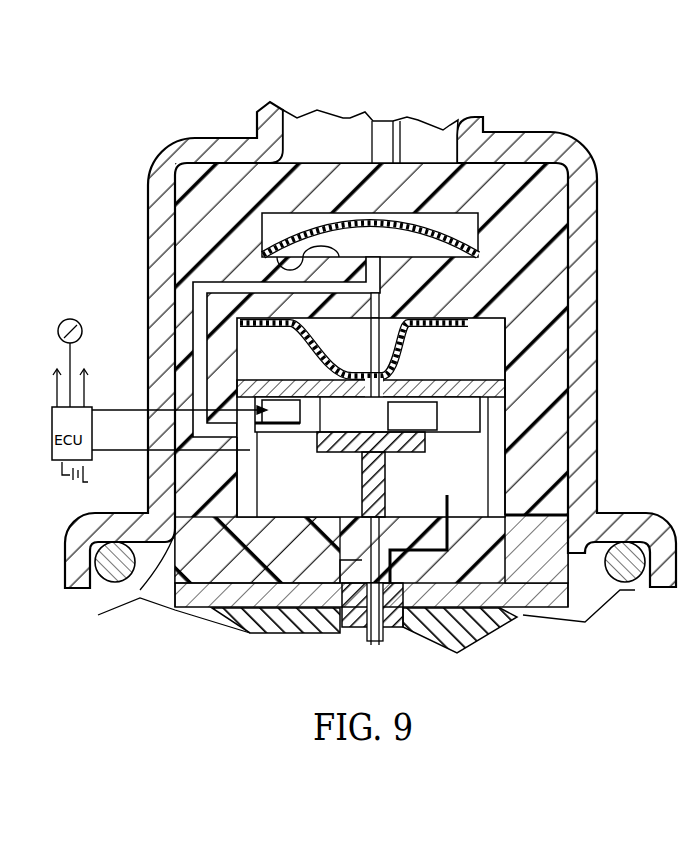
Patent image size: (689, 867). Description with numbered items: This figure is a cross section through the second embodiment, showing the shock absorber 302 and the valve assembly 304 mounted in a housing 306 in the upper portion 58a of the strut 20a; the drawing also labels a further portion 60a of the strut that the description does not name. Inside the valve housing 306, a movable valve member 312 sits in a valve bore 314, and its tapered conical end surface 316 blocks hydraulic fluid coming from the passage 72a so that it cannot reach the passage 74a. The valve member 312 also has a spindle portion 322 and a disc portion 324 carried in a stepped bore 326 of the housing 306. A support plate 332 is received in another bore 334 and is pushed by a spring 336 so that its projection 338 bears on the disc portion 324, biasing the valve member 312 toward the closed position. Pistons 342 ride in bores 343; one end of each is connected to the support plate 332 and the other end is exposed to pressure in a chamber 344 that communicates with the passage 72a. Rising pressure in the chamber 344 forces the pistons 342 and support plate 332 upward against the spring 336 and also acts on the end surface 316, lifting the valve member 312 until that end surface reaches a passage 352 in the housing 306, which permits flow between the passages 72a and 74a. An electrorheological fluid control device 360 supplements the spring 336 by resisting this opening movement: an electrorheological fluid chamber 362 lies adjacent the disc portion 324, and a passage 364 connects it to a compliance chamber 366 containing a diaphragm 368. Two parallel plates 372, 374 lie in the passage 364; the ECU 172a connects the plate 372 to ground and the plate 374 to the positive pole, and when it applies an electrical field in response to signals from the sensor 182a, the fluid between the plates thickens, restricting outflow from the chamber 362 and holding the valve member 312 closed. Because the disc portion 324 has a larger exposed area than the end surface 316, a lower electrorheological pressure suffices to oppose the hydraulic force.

The strut 20a is at (602, 128).
The upper portion of the strut 58a is at (604, 210).
The housing cap 60a is at (230, 142).
The passage 72a is at (342, 598).
The passage 74a is at (515, 615).
The ECU 172a is at (58, 462).
The sensor 182a is at (86, 338).
The shock absorber 302 is at (562, 630).
The valve assembly 304 is at (550, 377).
The valve housing 306 is at (515, 390).
The movable valve member 312 is at (390, 472).
The valve bore 314 is at (262, 500).
The tapered conical end surface 316 is at (372, 595).
The spindle portion 322 is at (449, 457).
The disc portion 324 is at (427, 436).
The stepped bore 326 is at (330, 470).
The support plate 332 is at (486, 376).
The bore 334 is at (565, 280).
The spring 336 is at (403, 358).
The projection 338 is at (392, 420).
The pistons 342 is at (510, 525).
The bores 343 is at (156, 583).
The chamber 344 is at (247, 633).
The passage 352 is at (445, 478).
The electrorheological fluid control device 360 is at (240, 418).
The electrorheological fluid chamber 362 is at (322, 418).
The passage 364 is at (188, 320).
The compliance chamber 366 is at (285, 262).
The diaphragm 368 is at (444, 238).
The plate 372 is at (288, 412).
The plate 374 is at (257, 443).